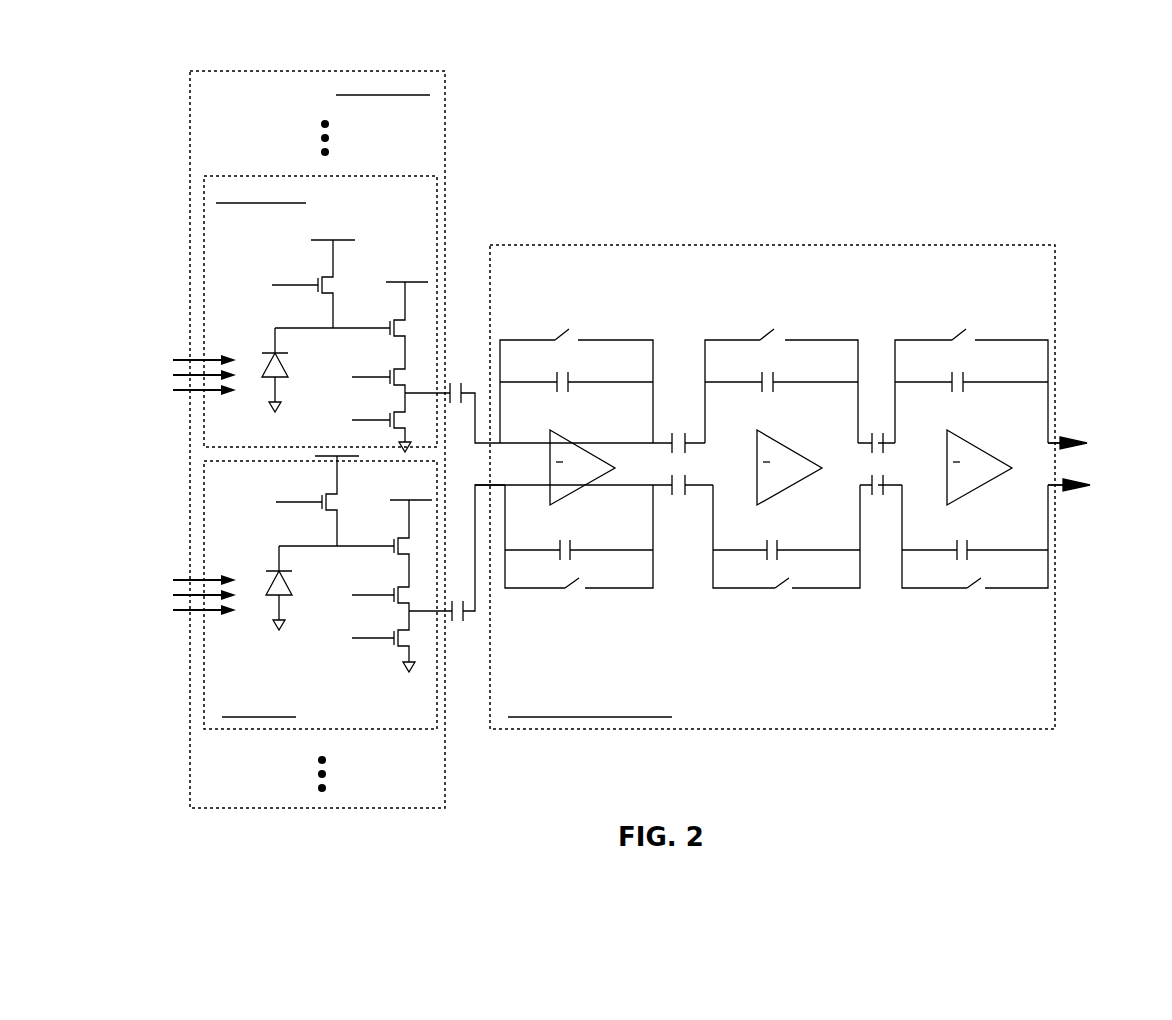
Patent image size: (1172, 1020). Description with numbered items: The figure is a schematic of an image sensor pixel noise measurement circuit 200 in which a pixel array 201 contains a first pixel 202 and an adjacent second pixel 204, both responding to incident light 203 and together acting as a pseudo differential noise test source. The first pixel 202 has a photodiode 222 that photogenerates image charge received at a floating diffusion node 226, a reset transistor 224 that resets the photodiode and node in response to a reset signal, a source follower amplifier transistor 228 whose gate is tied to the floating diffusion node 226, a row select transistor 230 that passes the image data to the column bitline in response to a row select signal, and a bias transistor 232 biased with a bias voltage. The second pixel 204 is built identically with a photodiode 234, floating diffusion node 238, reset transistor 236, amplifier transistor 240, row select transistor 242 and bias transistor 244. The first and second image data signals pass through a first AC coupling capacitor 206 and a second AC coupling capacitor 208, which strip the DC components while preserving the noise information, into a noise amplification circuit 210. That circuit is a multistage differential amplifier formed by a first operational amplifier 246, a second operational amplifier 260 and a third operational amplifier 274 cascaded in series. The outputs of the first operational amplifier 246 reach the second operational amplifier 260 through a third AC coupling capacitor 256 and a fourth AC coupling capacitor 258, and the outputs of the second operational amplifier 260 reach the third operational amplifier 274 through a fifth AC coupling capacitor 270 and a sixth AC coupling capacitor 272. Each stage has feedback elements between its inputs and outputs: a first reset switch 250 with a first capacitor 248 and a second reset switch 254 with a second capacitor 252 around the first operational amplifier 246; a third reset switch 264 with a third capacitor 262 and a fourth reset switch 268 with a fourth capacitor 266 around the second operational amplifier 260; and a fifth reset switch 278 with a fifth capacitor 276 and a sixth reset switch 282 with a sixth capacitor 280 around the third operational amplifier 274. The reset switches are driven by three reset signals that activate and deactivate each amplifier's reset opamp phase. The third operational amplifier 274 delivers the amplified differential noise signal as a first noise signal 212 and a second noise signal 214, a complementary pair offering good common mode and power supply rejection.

The image sensor pixel noise measurement circuit 200 is at (1113, 161).
The pixel array 201 is at (446, 98).
The first pixel 202 is at (272, 176).
The incident light 203 is at (188, 357).
The second pixel 204 is at (272, 730).
The first AC coupling capacitor 206 is at (458, 380).
The second AC coupling capacitor 208 is at (456, 628).
The noise amplification circuit 210 is at (532, 730).
The first noise signal 212 is at (1080, 425).
The second noise signal 214 is at (1080, 505).
The photodiode 222 is at (262, 368).
The reset transistor 224 is at (316, 270).
The floating diffusion node 226 is at (332, 322).
The amplifier transistor 228 is at (392, 322).
The row select transistor 230 is at (392, 371).
The bias transistor 232 is at (392, 413).
The photodiode 234 is at (266, 586).
The reset transistor 236 is at (316, 488).
The floating diffusion node 238 is at (336, 540).
The amplifier transistor 240 is at (396, 540).
The row select transistor 242 is at (396, 589).
The bias transistor 244 is at (396, 631).
The first operational amplifier 246 is at (573, 437).
The first capacitor 248 is at (572, 378).
The first reset switch 250 is at (598, 335).
The second capacitor 252 is at (577, 545).
The second reset switch 254 is at (586, 585).
The third AC coupling capacitor 256 is at (671, 410).
The fourth AC coupling capacitor 258 is at (676, 522).
The second operational amplifier 260 is at (779, 437).
The third capacitor 262 is at (778, 378).
The third reset switch 264 is at (804, 335).
The fourth capacitor 266 is at (783, 545).
The fourth reset switch 268 is at (792, 585).
The fifth AC coupling capacitor 270 is at (870, 410).
The sixth AC coupling capacitor 272 is at (876, 522).
The third operational amplifier 274 is at (969, 437).
The fifth capacitor 276 is at (968, 378).
The fifth reset switch 278 is at (994, 335).
The sixth capacitor 280 is at (973, 545).
The sixth reset switch 282 is at (982, 585).